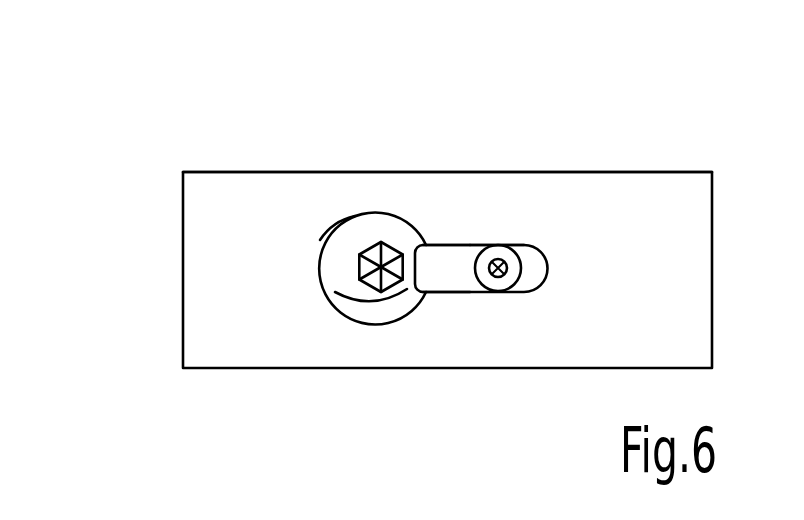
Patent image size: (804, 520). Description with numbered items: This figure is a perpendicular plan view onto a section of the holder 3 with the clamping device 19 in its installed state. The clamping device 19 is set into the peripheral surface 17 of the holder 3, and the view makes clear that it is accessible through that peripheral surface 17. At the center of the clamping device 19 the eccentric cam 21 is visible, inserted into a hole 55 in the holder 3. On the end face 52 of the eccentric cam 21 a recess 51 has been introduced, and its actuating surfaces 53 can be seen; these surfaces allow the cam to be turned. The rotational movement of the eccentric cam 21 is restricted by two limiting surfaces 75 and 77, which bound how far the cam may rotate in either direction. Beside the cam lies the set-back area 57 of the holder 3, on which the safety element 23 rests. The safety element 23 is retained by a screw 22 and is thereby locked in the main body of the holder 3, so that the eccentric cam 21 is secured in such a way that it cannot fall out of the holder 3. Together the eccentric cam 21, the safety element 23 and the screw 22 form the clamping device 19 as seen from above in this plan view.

The holder 3 is at (652, 171).
The peripheral surface 17 is at (234, 173).
The clamping device 19 is at (377, 193).
The eccentric cam 21 is at (393, 227).
The screw 22 is at (510, 277).
The safety element 23 is at (453, 267).
The recess 51 is at (357, 266).
The end face 52 is at (337, 241).
The actuating surfaces 53 is at (357, 278).
The hole 55 is at (336, 226).
The set-back area 57 is at (483, 245).
The limiting surface 75 is at (335, 292).
The limiting surface 77 is at (421, 246).